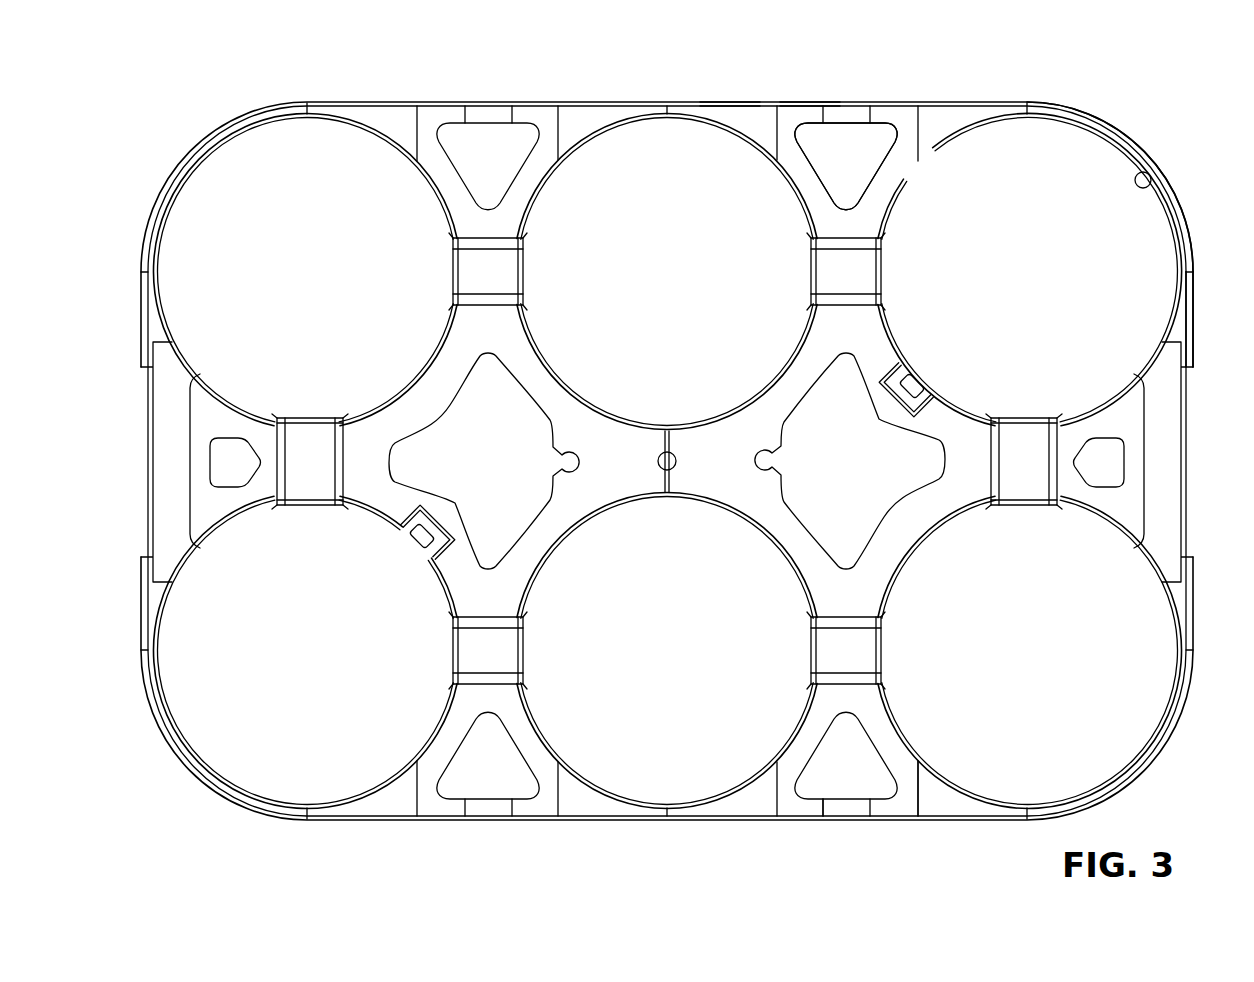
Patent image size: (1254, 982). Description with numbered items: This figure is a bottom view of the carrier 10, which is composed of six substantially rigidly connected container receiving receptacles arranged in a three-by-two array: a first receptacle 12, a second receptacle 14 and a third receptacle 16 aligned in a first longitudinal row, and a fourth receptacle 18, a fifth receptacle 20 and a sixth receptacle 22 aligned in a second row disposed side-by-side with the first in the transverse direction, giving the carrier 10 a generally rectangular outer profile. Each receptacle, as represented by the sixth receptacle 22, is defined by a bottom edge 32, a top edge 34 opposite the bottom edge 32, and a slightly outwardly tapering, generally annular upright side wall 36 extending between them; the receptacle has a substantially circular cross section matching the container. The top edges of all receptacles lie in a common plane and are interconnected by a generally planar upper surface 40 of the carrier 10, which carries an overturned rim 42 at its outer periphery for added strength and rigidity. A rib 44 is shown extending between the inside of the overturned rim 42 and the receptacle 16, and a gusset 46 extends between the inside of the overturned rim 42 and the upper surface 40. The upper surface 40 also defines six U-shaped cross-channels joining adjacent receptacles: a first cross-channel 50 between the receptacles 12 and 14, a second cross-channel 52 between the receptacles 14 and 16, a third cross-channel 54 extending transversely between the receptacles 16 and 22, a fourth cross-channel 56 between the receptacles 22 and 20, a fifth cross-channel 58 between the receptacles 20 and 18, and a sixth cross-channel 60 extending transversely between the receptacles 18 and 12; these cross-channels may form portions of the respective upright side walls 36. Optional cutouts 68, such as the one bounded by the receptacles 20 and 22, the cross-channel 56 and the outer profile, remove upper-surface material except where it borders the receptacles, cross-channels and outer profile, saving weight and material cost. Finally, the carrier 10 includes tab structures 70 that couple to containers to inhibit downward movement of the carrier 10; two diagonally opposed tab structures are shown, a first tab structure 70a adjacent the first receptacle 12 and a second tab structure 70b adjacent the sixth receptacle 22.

The carrier 10 is at (138, 413).
The first receptacle 12 is at (294, 785).
The second receptacle 14 is at (655, 785).
The third receptacle 16 is at (983, 775).
The fourth receptacle 18 is at (294, 160).
The fifth receptacle 20 is at (655, 160).
The sixth receptacle 22 is at (1016, 160).
The bottom edge 32 is at (1187, 230).
The top edge 34 is at (1130, 145).
The upright side wall 36 is at (1150, 186).
The upper surface 40 is at (804, 117).
The overturned rim 42 is at (728, 106).
The rib 44 is at (921, 798).
The gusset 46 is at (826, 803).
The first U-shaped cross-channel 50 is at (495, 665).
The second U-shaped cross-channel 52 is at (855, 665).
The third U-shaped cross-channel 54 is at (1034, 472).
The fourth U-shaped cross-channel 56 is at (855, 287).
The fifth U-shaped cross-channel 58 is at (495, 287).
The sixth U-shaped cross-channel 60 is at (316, 472).
The cutout 68 is at (843, 150).
The tab structure 70 is at (687, 476).
The first tab structure 70a is at (408, 548).
The second tab structure 70b is at (919, 374).